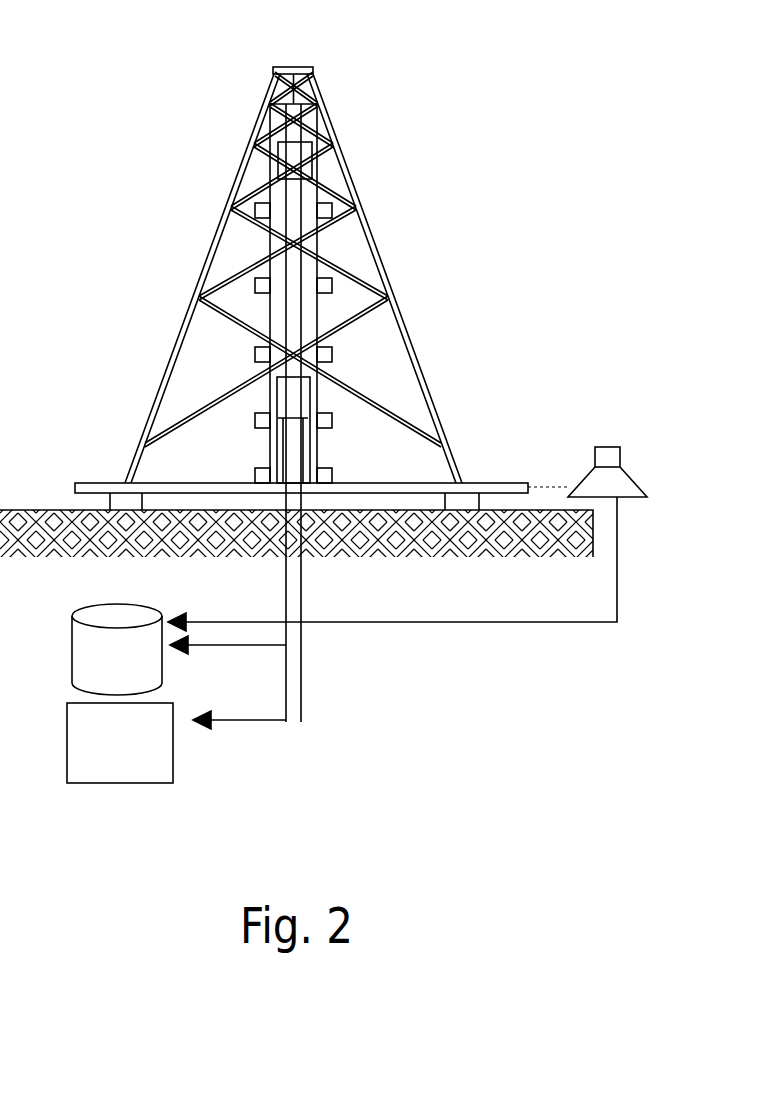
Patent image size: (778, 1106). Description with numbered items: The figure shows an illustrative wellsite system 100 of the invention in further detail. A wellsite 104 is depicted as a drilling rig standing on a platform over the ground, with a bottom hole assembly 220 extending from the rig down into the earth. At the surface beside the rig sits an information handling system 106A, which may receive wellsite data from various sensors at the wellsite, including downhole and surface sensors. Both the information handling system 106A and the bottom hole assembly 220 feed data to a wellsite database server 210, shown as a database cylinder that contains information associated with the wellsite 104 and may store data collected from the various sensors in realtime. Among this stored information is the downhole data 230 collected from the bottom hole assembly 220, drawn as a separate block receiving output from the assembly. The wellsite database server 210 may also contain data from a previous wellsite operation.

The system 100 is at (432, 52).
The wellsite 104 is at (372, 223).
The information handling system 106A is at (610, 447).
The wellsite database server 210 is at (147, 605).
The bottom hole assembly 220 is at (301, 687).
The downhole data 230 is at (173, 753).